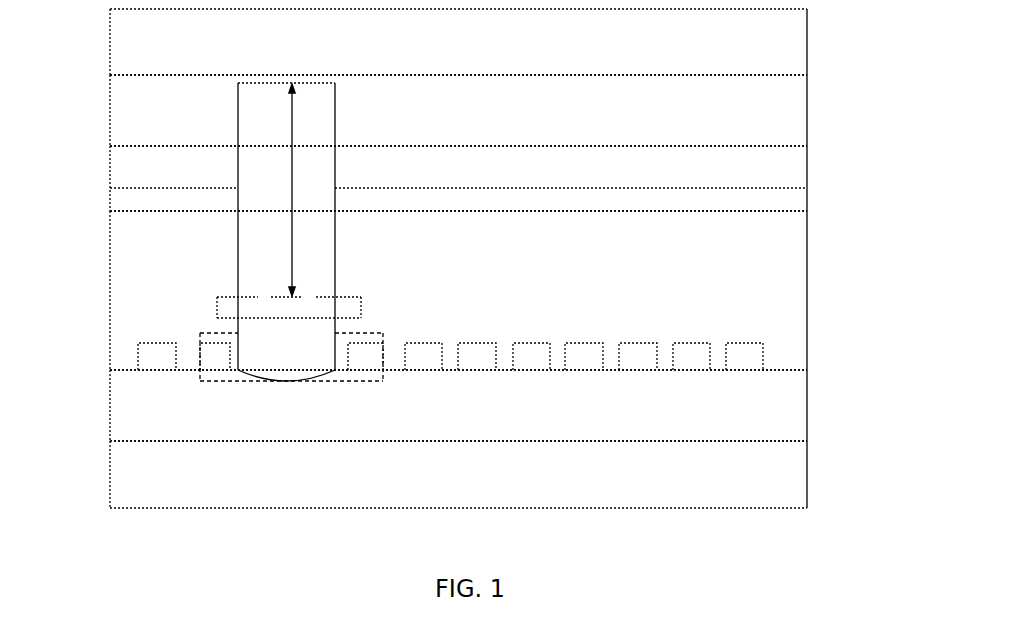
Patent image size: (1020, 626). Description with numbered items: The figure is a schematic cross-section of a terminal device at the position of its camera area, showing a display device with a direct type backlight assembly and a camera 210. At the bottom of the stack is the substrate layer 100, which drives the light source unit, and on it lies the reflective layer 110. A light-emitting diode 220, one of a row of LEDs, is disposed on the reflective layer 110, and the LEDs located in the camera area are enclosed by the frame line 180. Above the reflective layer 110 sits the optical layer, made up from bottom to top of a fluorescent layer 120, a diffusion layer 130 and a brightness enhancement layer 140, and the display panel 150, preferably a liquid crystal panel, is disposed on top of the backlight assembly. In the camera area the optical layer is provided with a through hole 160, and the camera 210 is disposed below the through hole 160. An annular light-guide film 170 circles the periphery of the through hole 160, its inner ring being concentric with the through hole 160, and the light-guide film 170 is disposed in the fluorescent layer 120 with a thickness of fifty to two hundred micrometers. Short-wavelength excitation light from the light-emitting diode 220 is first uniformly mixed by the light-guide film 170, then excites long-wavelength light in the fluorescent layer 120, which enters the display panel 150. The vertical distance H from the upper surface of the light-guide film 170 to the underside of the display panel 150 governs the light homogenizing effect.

The substrate layer 100 is at (819, 477).
The reflective layer 110 is at (819, 411).
The fluorescent layer 120 is at (819, 289).
The diffusion layer 130 is at (819, 180).
The brightness enhancement layer 140 is at (819, 114).
The display panel 150 is at (819, 43).
The through hole 160 is at (244, 189).
The light-guide film 170 is at (356, 292).
The frame line 180 is at (206, 379).
The camera 210 is at (286, 365).
The light-emitting diode 220 is at (772, 357).